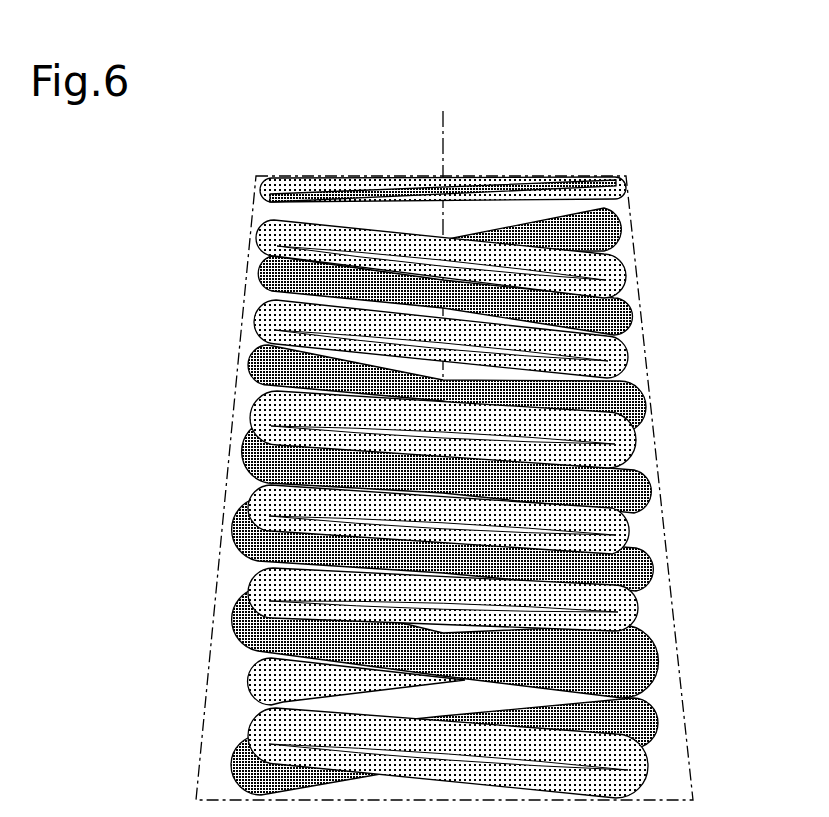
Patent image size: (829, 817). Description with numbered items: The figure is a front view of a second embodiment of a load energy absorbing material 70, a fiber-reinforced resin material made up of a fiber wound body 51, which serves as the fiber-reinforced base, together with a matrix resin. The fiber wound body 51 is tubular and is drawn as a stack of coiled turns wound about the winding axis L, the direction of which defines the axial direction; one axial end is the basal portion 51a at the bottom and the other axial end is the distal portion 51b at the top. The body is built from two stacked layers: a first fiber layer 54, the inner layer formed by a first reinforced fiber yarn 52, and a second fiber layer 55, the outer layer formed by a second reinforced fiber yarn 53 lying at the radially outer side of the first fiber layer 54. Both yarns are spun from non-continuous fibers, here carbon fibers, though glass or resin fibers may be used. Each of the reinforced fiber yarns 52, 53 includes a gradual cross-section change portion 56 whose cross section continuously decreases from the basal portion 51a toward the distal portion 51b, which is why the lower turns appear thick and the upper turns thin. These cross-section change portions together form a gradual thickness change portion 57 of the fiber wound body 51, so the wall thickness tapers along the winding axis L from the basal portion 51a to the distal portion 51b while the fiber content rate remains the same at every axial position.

The load energy absorbing material 70 is at (453, 460).
The fiber wound body 51 is at (623, 263).
The basal portion 51a is at (631, 763).
The distal portion 51b is at (561, 170).
The first reinforced fiber yarn 52 is at (633, 747).
The second reinforced fiber yarn 53 is at (648, 652).
The first fiber layer 54 is at (245, 663).
The second fiber layer 55 is at (220, 522).
The gradual cross-section change portion 56 is at (631, 613).
The gradual thickness change portion 57 is at (220, 437).
The winding axis L is at (437, 137).